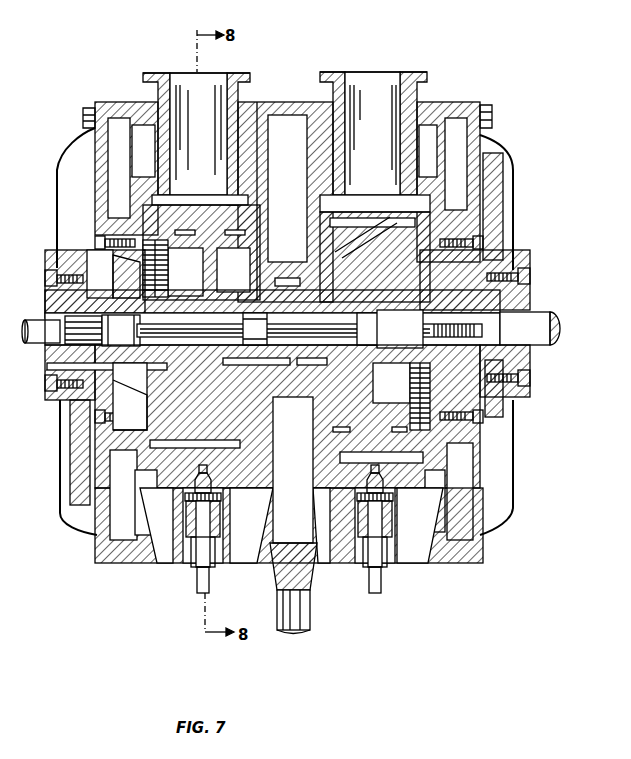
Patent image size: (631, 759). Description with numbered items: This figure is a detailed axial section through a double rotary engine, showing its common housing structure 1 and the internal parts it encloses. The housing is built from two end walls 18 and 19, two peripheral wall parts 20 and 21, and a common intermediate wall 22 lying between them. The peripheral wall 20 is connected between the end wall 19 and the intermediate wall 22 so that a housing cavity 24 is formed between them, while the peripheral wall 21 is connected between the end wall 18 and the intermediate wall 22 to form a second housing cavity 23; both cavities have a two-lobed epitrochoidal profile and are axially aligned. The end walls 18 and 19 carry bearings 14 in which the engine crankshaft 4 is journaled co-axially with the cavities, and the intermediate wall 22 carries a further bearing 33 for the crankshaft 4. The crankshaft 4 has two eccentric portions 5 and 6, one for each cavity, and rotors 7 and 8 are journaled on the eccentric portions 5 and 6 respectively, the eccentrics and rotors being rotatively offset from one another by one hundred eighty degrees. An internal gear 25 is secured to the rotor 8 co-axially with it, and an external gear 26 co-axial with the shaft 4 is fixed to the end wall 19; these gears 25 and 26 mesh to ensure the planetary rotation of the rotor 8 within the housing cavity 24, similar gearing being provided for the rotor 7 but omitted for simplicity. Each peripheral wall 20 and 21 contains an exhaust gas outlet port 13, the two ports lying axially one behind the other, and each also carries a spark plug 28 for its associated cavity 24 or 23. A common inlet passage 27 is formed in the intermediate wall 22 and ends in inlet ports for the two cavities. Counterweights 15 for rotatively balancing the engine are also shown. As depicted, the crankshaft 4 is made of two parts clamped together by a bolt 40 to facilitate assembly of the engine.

The common housing structure 1 is at (407, 74).
The crankshaft 4 is at (523, 343).
The eccentric portion 5 is at (395, 413).
The eccentric portion 6 is at (180, 256).
The rotor 7 is at (376, 452).
The rotor 8 is at (213, 229).
The exhaust gas outlet port 13 is at (180, 80).
The bearing 14 is at (127, 302).
The counterweight 15 is at (497, 187).
The end wall 18 is at (460, 106).
The end wall 19 is at (112, 108).
The peripheral wall 20 is at (241, 76).
The peripheral wall 21 is at (331, 76).
The common intermediate wall 22 is at (317, 553).
The housing cavity 23 is at (400, 458).
The housing cavity 24 is at (190, 200).
The internal gear 25 is at (147, 240).
The external gear 26 is at (152, 289).
The common inlet passage 27 is at (305, 185).
The spark plug 28 is at (200, 558).
The bearing 33 is at (285, 280).
The bolt 40 is at (226, 328).